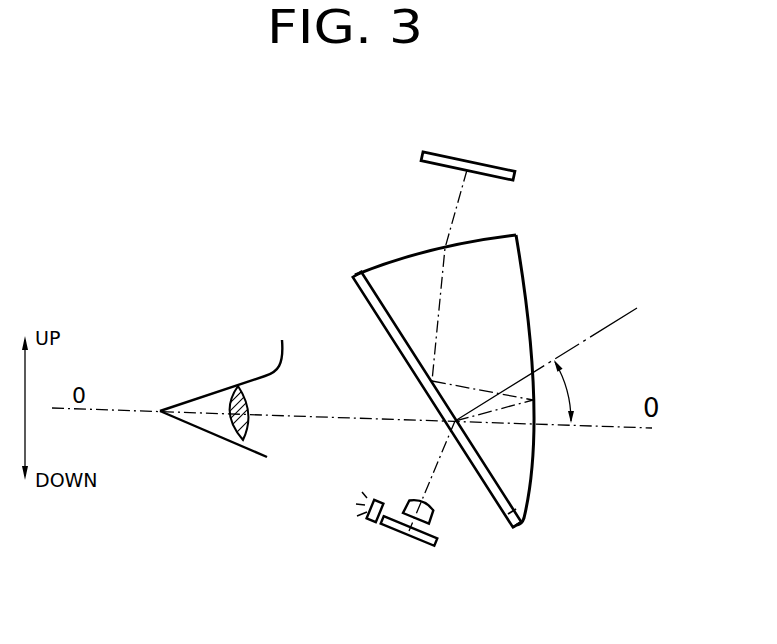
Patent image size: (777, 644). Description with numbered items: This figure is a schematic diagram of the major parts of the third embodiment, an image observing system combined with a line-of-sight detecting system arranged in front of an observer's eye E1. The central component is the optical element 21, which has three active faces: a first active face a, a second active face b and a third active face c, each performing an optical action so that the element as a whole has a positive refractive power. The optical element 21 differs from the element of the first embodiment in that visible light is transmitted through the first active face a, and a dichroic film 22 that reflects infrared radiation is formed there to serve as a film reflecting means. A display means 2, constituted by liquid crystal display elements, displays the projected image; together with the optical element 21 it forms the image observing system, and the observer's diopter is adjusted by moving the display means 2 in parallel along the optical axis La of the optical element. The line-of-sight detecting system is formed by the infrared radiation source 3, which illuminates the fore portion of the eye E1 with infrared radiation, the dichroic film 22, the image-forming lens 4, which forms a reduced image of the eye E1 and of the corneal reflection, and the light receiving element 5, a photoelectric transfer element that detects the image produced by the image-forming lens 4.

The display means 2 is at (498, 165).
The optical element 21 is at (477, 361).
The dichroic film 22 is at (507, 527).
The infrared radiation source 3 is at (370, 522).
The image-forming lens 4 is at (437, 518).
The light receiving element 5 is at (427, 547).
The first active face a is at (377, 293).
The second active face b is at (527, 290).
The third active face c is at (410, 253).
The optical axis La is at (461, 195).
The eye E1 is at (227, 443).